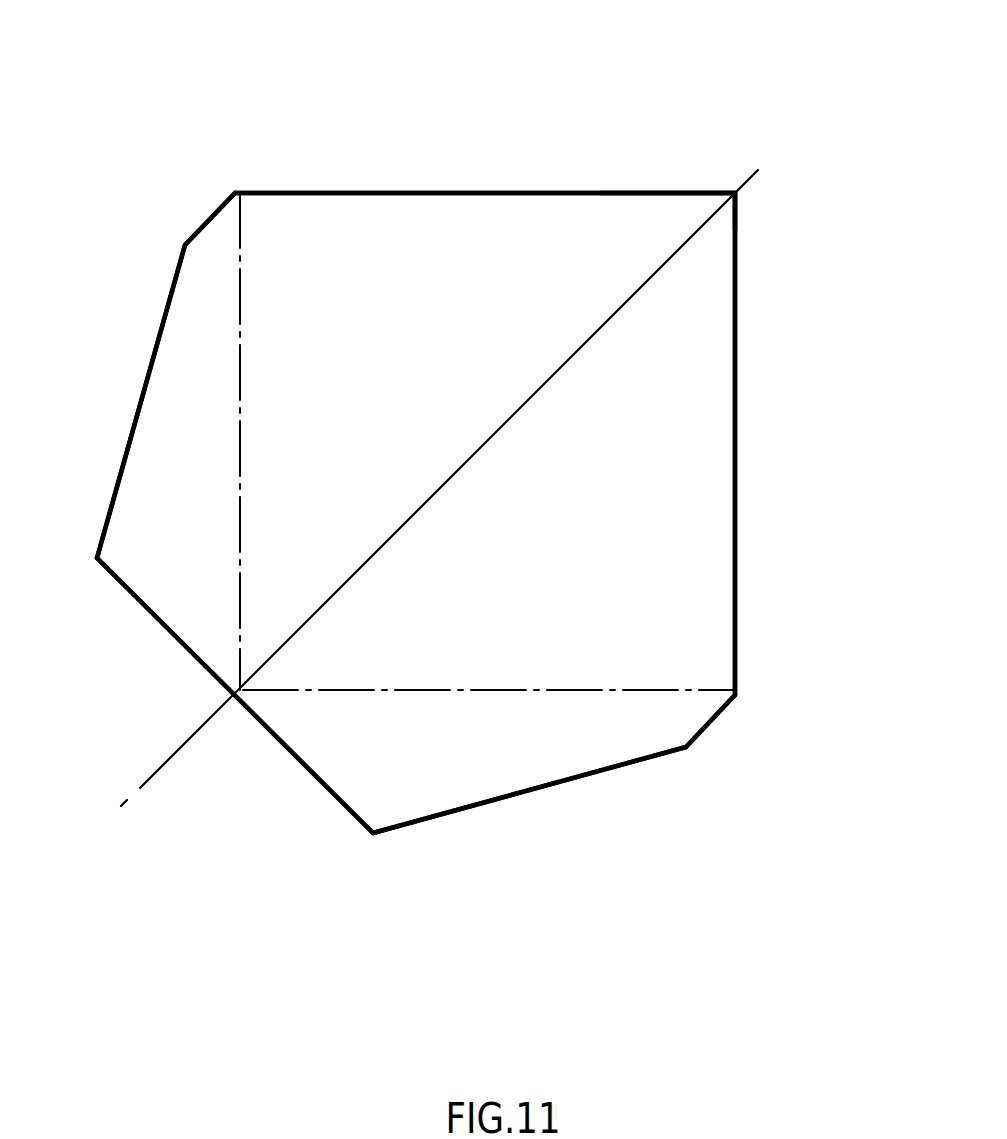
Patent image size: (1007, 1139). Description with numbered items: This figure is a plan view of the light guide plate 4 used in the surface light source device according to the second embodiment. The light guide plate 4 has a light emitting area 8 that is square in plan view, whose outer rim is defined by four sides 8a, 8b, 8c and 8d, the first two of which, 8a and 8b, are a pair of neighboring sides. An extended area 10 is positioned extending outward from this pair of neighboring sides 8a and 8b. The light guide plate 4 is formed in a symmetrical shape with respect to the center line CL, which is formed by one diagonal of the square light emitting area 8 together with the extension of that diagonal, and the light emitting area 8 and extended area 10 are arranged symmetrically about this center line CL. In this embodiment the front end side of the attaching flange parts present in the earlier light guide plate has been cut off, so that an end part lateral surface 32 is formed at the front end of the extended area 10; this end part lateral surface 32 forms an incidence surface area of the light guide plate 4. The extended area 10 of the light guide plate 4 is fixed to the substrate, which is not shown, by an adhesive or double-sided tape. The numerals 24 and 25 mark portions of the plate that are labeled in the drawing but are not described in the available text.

The light guide plate 4 is at (523, 190).
The light emitting area 8 is at (388, 225).
The side 8a is at (452, 690).
The side 8b is at (241, 470).
The side 8c is at (622, 193).
The side 8d is at (733, 470).
The extended area 10 is at (197, 437).
The corner 24 is at (737, 197).
The chamfered portion 25 is at (193, 232).
The end part lateral surface 32 is at (253, 718).
The center line CL is at (750, 178).